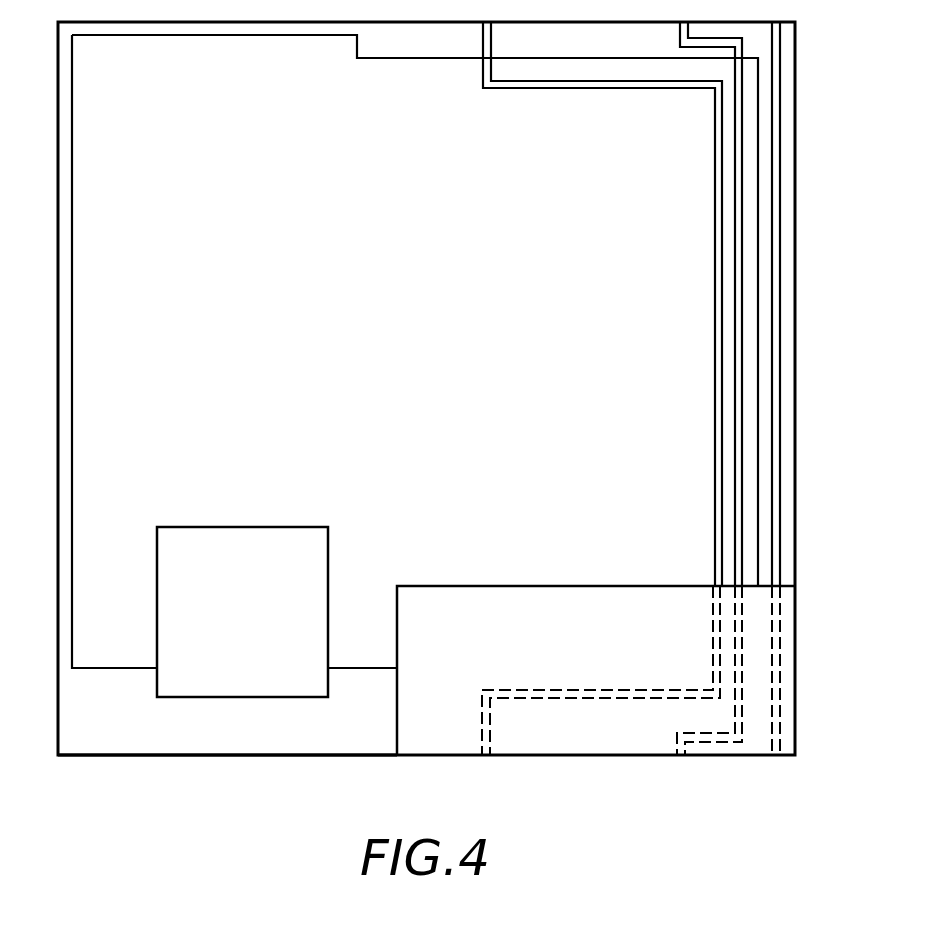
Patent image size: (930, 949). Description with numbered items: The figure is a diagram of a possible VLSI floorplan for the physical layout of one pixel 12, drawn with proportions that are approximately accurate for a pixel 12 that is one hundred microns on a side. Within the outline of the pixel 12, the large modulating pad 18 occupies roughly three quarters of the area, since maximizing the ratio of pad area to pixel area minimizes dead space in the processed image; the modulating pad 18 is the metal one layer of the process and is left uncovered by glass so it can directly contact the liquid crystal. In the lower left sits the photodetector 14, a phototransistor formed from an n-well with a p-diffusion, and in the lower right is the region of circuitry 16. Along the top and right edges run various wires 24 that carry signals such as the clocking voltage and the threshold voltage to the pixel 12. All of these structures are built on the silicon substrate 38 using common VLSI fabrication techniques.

The pixel 12 is at (648, 775).
The photodetector 14 is at (258, 626).
The circuitry 16 is at (608, 670).
The modulating pad 18 is at (435, 362).
The wires 24 is at (723, 320).
The silicon substrate 38 is at (132, 718).